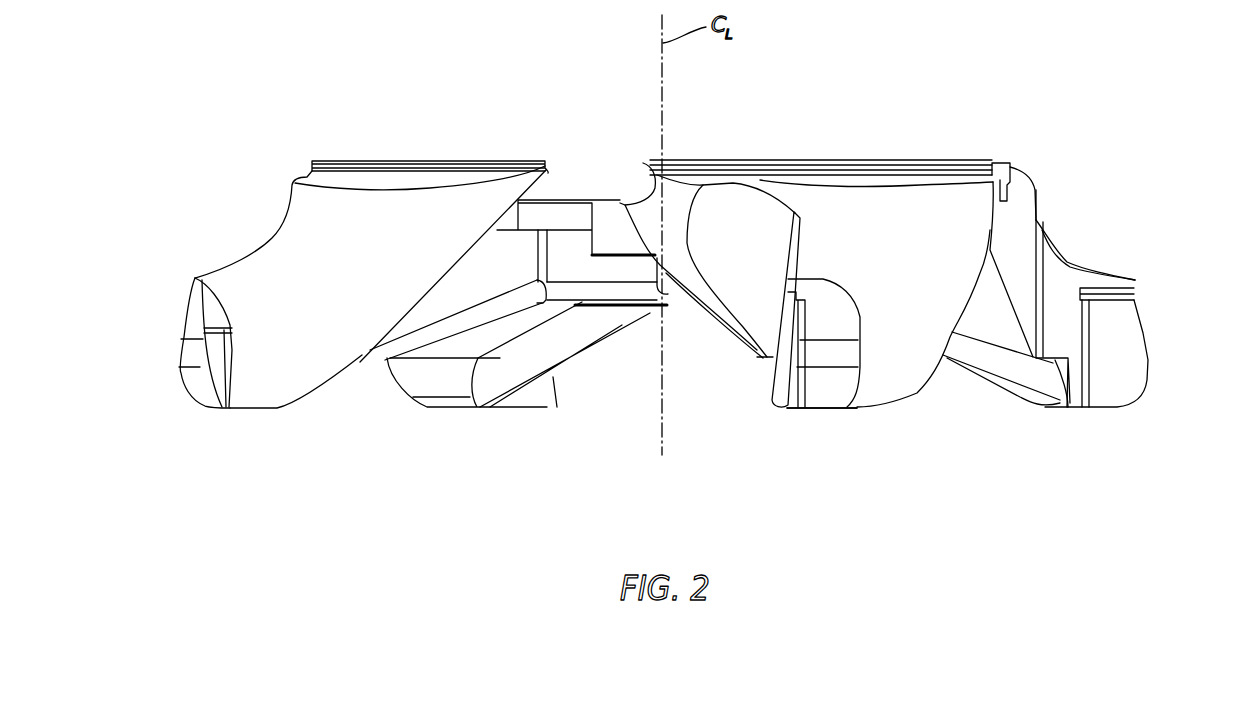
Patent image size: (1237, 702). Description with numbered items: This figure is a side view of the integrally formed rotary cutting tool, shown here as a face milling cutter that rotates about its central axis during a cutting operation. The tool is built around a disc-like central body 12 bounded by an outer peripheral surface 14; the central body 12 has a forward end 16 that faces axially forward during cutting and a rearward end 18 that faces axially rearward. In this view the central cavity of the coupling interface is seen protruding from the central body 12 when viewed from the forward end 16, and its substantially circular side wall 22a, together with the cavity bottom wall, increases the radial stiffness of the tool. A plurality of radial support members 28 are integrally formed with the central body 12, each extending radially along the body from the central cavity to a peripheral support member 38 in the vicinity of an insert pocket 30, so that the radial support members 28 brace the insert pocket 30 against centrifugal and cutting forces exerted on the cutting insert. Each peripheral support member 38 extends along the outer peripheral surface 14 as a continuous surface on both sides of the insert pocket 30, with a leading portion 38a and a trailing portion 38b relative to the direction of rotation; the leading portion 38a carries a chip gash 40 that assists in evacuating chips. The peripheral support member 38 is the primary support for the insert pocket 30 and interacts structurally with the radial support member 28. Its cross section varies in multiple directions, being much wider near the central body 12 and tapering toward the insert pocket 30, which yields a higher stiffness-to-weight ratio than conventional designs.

The disc-like central body 12 is at (911, 148).
The outer peripheral surface 14 is at (978, 160).
The forward end 16 is at (845, 435).
The rearward end 18 is at (832, 133).
The circular side wall 22a is at (633, 273).
The radial support member 28 is at (425, 335).
The insert pocket 30 is at (1150, 313).
The peripheral support member 38 is at (1067, 238).
The leading portion 38a is at (1040, 193).
The trailing portion 38b is at (1097, 260).
The chip gash 40 is at (755, 318).